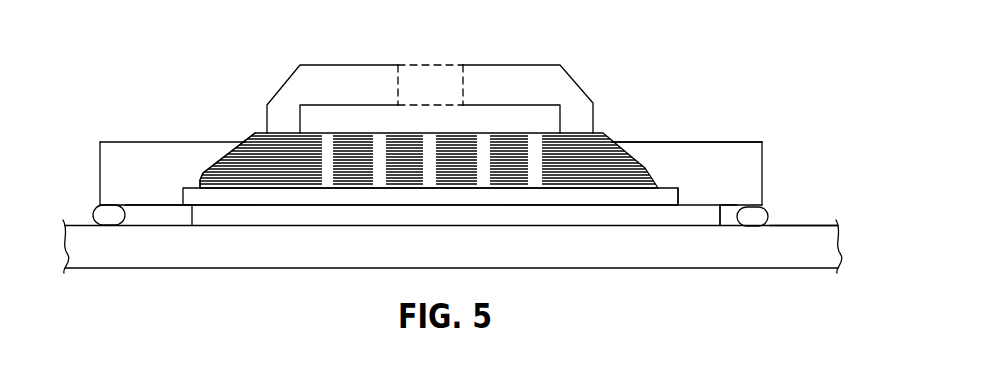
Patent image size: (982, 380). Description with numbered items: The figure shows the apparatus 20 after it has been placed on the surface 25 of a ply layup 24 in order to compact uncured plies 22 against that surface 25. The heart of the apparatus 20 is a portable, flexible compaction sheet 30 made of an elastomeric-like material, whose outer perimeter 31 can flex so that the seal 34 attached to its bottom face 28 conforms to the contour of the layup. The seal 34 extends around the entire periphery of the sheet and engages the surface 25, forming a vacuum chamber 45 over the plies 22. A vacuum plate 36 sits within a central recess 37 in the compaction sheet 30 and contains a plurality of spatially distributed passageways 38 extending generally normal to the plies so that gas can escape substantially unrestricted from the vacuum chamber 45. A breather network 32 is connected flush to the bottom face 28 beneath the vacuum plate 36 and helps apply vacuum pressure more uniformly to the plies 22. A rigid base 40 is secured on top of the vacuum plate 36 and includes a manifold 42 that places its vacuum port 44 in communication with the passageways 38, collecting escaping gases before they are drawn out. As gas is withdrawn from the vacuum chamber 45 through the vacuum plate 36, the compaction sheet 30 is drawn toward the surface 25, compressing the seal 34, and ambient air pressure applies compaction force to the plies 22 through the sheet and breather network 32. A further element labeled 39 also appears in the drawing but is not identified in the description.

The apparatus 20 is at (695, 73).
The uncured plies 22 is at (229, 188).
The ply layup 24 is at (125, 250).
The surface 25 is at (802, 219).
The bottom face 28 is at (160, 214).
The compaction sheet 30 is at (731, 158).
The outer perimeter 31 is at (753, 129).
The breather network 32 is at (665, 190).
The seal 34 is at (92, 210).
The vacuum plate 36 is at (258, 162).
The central recess 37 is at (638, 135).
The passageways 38 is at (544, 158).
The interconnect layer edge 39 is at (692, 198).
The base 40 is at (290, 92).
The manifold 42 is at (349, 106).
The vacuum port 44 is at (432, 79).
The vacuum chamber 45 is at (137, 199).